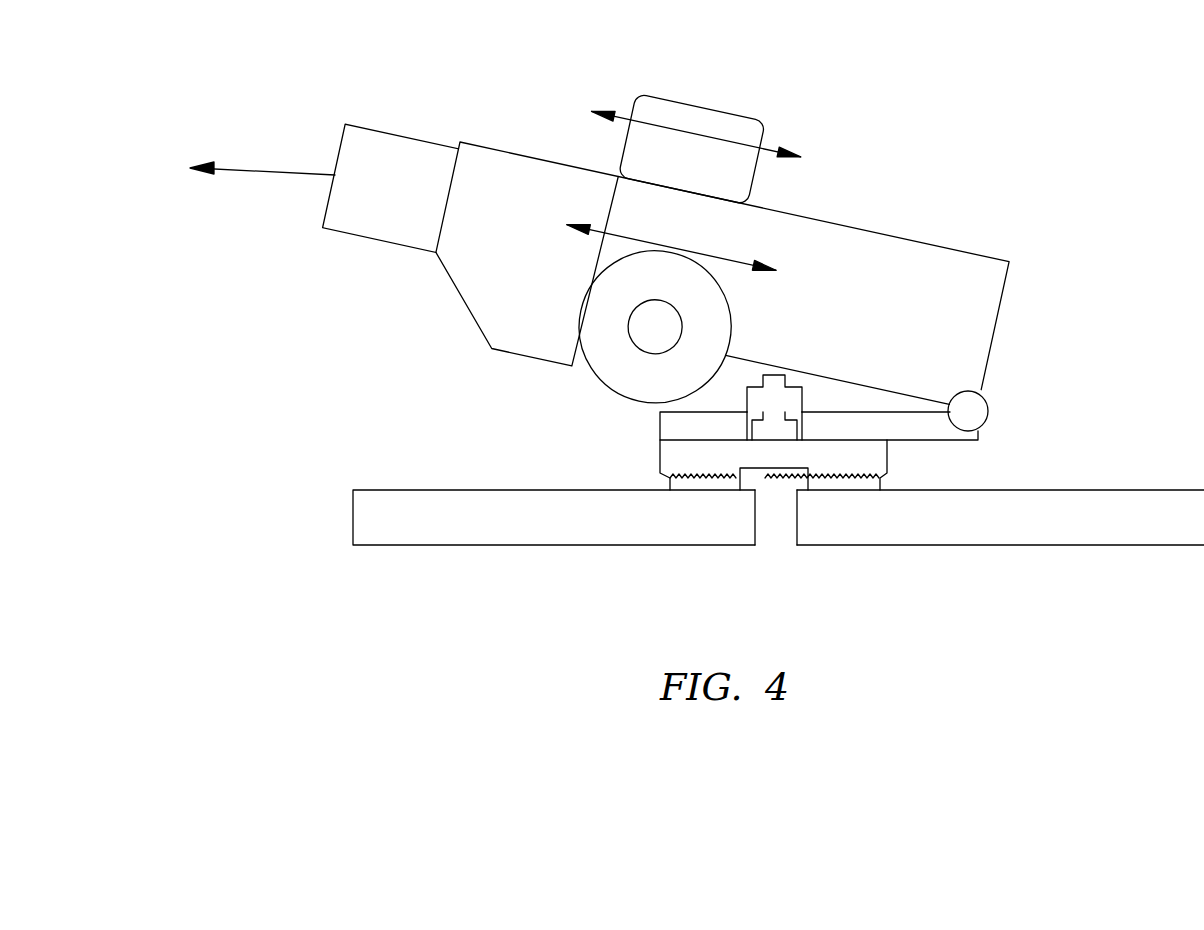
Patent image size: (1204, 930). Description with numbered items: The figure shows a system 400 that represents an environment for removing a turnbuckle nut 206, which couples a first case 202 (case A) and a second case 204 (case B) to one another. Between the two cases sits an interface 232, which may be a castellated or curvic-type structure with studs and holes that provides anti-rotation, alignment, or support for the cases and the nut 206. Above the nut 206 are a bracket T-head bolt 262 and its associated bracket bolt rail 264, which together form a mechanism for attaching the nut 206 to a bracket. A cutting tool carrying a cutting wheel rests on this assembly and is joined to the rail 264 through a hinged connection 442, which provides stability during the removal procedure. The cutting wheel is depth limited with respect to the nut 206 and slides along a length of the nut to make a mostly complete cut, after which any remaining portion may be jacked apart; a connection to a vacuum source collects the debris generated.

The system 400 is at (1100, 182).
The hinged connection 442 is at (990, 408).
The bracket T-head bolt 262 is at (770, 373).
The bracket bolt rail 264 is at (807, 410).
The nut 206 is at (870, 448).
The interface 232 is at (784, 530).
The first case 202 is at (457, 548).
The second case 204 is at (1083, 525).